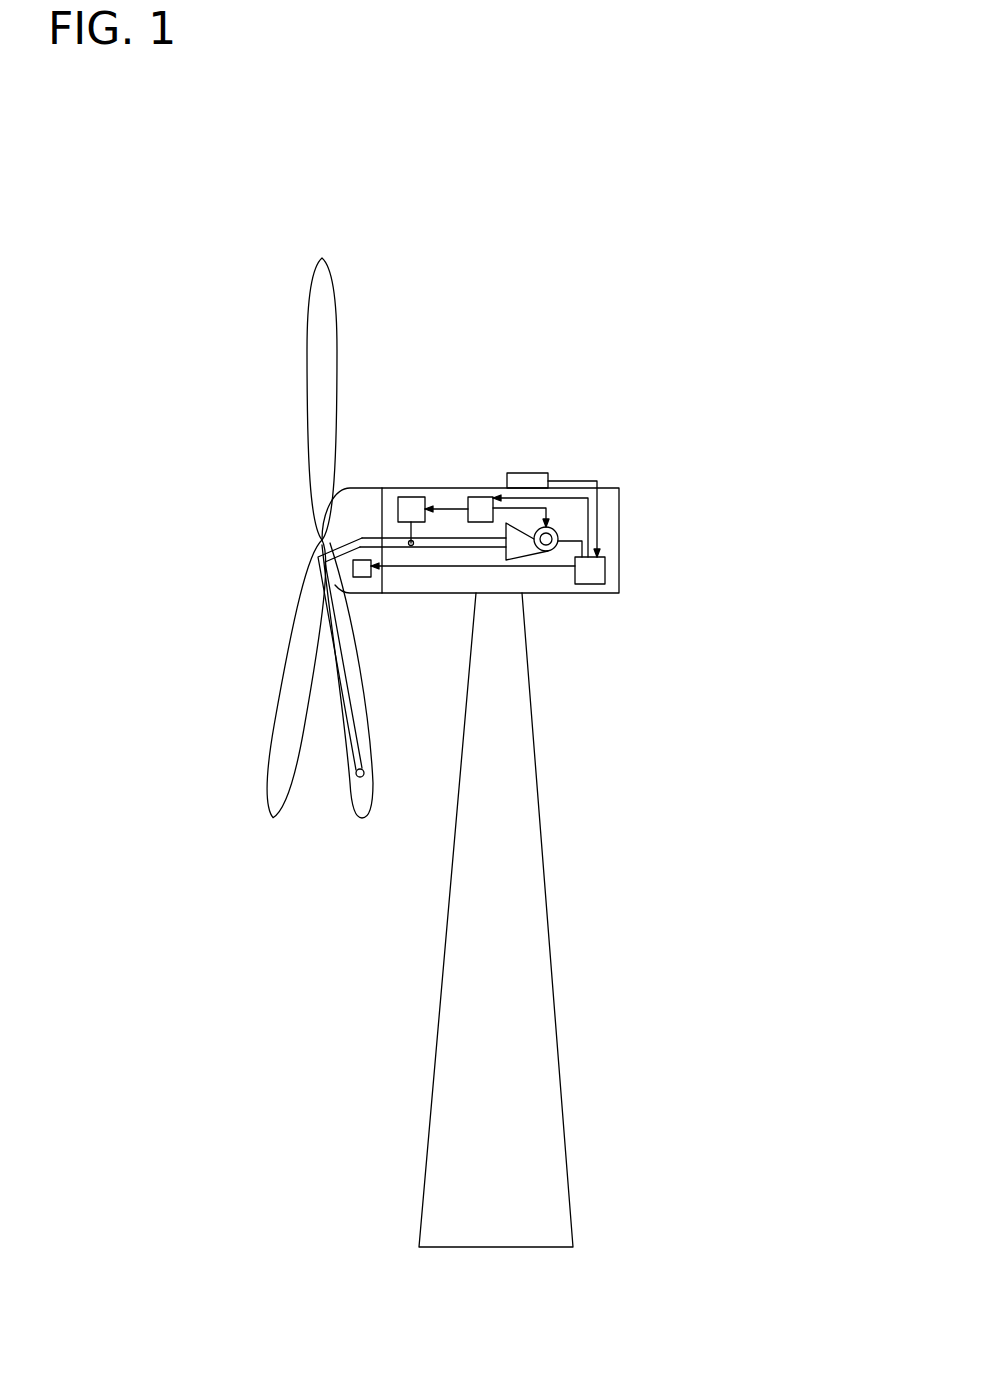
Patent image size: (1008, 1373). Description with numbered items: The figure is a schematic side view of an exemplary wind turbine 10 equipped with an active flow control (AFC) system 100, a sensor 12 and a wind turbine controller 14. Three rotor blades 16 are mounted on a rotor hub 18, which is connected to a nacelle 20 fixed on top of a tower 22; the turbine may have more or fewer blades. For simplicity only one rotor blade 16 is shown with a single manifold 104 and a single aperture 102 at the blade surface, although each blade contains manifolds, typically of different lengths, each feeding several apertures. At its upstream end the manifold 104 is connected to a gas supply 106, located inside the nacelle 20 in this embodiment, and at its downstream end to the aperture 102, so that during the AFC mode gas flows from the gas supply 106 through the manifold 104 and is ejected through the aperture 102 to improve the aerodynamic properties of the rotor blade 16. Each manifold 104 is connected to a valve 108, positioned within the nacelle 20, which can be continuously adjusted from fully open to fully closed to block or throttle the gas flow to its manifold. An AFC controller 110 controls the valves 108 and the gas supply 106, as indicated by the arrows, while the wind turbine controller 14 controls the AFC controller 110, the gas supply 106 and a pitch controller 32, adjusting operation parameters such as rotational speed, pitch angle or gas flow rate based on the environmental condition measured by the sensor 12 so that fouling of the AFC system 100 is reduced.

The wind turbine 10 is at (730, 157).
The AFC system 100 is at (625, 207).
The sensor 12 is at (528, 473).
The wind turbine controller 14 is at (588, 593).
The rotor blade 16 is at (307, 430).
The rotor hub 18 is at (368, 488).
The nacelle 20 is at (620, 503).
The tower 22 is at (545, 890).
The pitch controller 32 is at (361, 578).
The aperture 102 is at (360, 777).
The manifold 104 is at (350, 740).
The gas supply 106 is at (555, 531).
The valve 108 is at (411, 497).
The AFC controller 110 is at (480, 497).